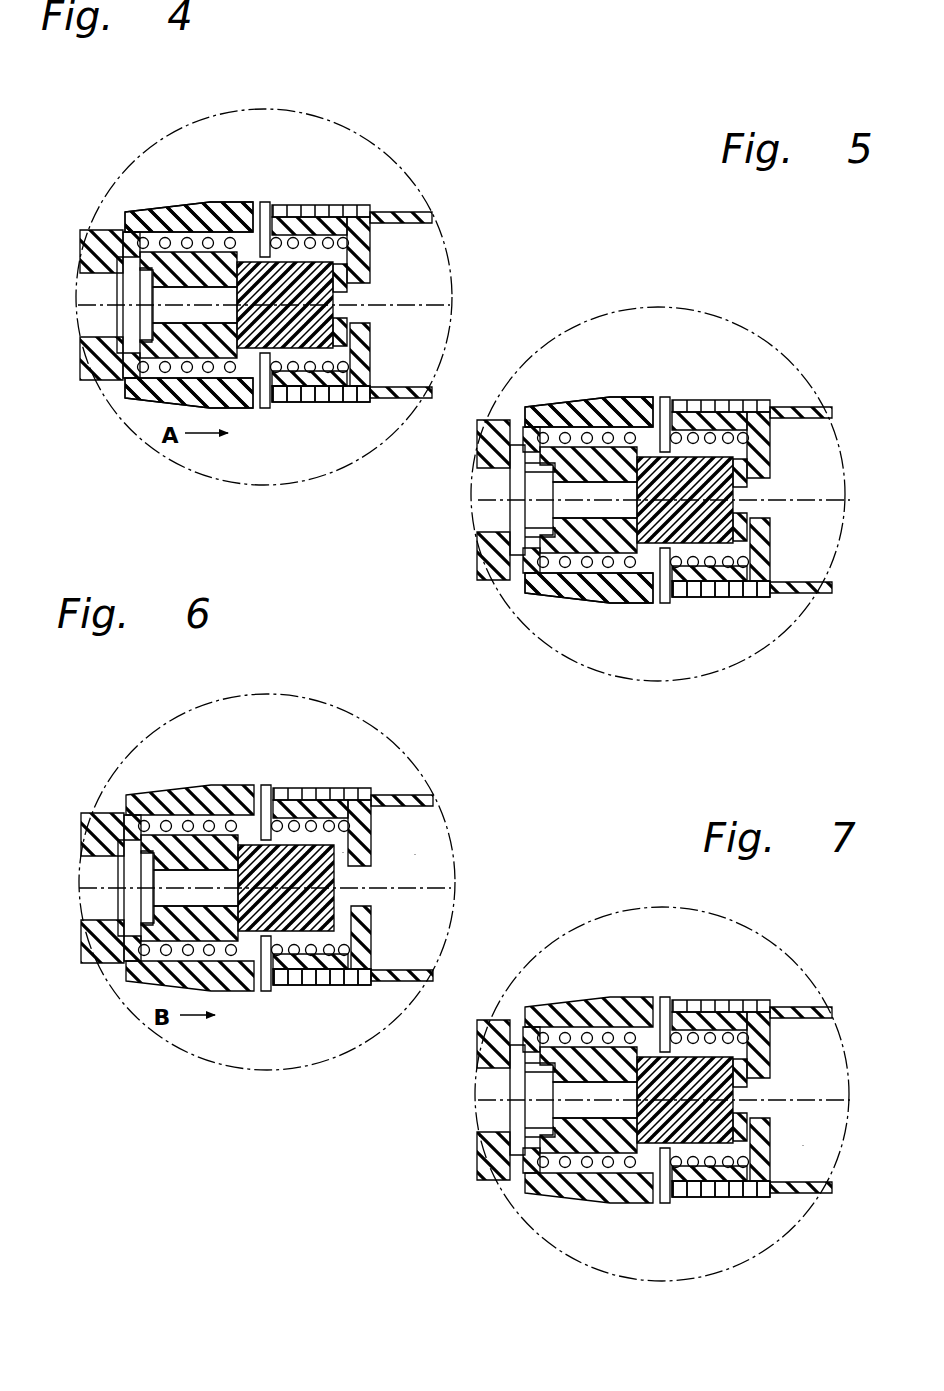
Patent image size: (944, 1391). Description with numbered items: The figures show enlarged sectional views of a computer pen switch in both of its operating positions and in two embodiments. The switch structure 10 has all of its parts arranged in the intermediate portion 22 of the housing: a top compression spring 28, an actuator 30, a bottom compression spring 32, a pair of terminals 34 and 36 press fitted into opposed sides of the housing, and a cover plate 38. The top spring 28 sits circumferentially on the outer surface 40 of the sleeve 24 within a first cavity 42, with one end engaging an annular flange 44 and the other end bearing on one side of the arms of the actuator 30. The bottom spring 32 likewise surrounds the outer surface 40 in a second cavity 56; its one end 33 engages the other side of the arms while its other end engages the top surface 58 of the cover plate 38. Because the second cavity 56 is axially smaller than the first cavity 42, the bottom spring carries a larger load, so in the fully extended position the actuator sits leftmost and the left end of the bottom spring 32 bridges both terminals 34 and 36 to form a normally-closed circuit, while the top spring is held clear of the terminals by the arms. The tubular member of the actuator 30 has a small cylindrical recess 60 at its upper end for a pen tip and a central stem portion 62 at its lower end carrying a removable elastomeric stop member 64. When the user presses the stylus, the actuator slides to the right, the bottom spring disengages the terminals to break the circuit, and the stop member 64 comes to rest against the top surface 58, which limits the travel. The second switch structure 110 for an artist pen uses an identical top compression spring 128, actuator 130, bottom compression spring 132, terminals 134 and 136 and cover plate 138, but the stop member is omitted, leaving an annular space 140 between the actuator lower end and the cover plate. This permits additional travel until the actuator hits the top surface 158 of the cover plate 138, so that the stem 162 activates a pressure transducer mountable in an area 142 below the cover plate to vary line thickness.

In FIG. 4, the switch structure 10 is at (40, 101).
In FIG. 5, the switch structure 10 is at (782, 242).
In FIG. 4, the intermediate portion 22 is at (223, 197).
In FIG. 5, the intermediate portion 22 is at (633, 400).
In FIG. 4, the sleeve 24 is at (125, 365).
In FIG. 5, the sleeve 24 is at (582, 547).
In FIG. 4, the top compression spring 28 is at (197, 238).
In FIG. 5, the top compression spring 28 is at (583, 400).
In FIG. 4, the actuator 30 is at (347, 405).
In FIG. 5, the actuator 30 is at (753, 604).
In FIG. 4, the bottom compression spring 32 is at (303, 405).
In FIG. 5, the bottom compression spring 32 is at (708, 565).
In FIG. 4, the one end of the bottom spring 33 is at (290, 405).
In FIG. 5, the one end of the bottom spring 33 is at (677, 609).
In FIG. 6, the one end of the bottom spring 33 is at (290, 990).
In FIG. 7, the one end of the bottom spring 33 is at (687, 1030).
In FIG. 4, the terminal 34 is at (267, 200).
In FIG. 5, the terminal 34 is at (668, 400).
In FIG. 4, the terminal 36 is at (265, 407).
In FIG. 5, the terminal 36 is at (662, 605).
In FIG. 4, the cover plate 38 is at (400, 215).
In FIG. 5, the cover plate 38 is at (805, 410).
In FIG. 4, the outer surface 40 is at (140, 240).
In FIG. 5, the outer surface 40 is at (548, 400).
In FIG. 4, the first cavity 42 is at (187, 225).
In FIG. 5, the first cavity 42 is at (610, 400).
In FIG. 4, the annular flange 44 is at (100, 230).
In FIG. 5, the annular flange 44 is at (520, 405).
In FIG. 4, the second cavity 56 is at (317, 205).
In FIG. 5, the second cavity 56 is at (723, 405).
In FIG. 4, the top surface 58 is at (352, 225).
In FIG. 5, the top surface 58 is at (748, 412).
In FIG. 4, the cylindrical recess 60 is at (190, 312).
In FIG. 5, the cylindrical recess 60 is at (567, 507).
In FIG. 4, the central stem portion 62 is at (345, 300).
In FIG. 5, the central stem portion 62 is at (762, 514).
In FIG. 4, the stop member 64 is at (350, 288).
In FIG. 5, the stop member 64 is at (767, 467).
In FIG. 6, the switch structure 110 is at (247, 674).
In FIG. 7, the switch structure 110 is at (493, 1239).
In FIG. 6, the top compression spring 128 is at (160, 815).
In FIG. 7, the top compression spring 128 is at (600, 1033).
In FIG. 6, the actuator 130 is at (330, 990).
In FIG. 7, the actuator 130 is at (733, 1142).
In FIG. 6, the bottom compression spring 132 is at (282, 990).
In FIG. 7, the bottom compression spring 132 is at (717, 1165).
In FIG. 6, the terminal 134 is at (267, 787).
In FIG. 7, the terminal 134 is at (662, 995).
In FIG. 6, the terminal 136 is at (268, 992).
In FIG. 7, the terminal 136 is at (660, 1205).
In FIG. 6, the cover plate 138 is at (400, 800).
In FIG. 7, the cover plate 138 is at (770, 1010).
In FIG. 6, the annular space 140 is at (343, 850).
In FIG. 6, the area 142 is at (415, 852).
In FIG. 7, the area 142 is at (803, 1143).
In FIG. 7, the top surface 158 is at (723, 1023).
In FIG. 7, the stem 162 is at (772, 1085).